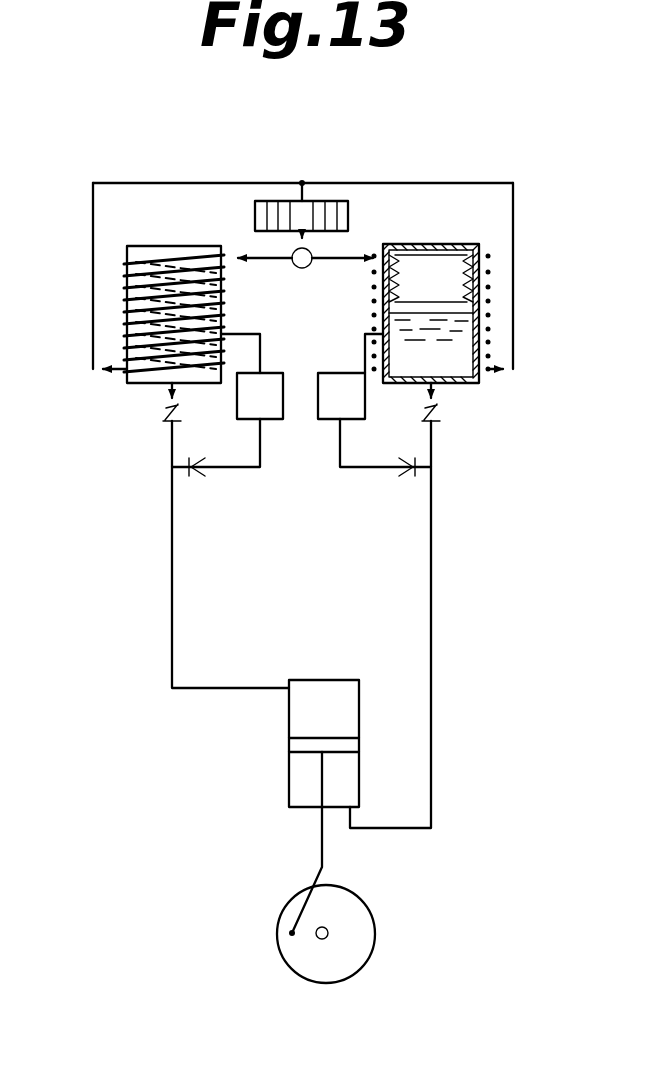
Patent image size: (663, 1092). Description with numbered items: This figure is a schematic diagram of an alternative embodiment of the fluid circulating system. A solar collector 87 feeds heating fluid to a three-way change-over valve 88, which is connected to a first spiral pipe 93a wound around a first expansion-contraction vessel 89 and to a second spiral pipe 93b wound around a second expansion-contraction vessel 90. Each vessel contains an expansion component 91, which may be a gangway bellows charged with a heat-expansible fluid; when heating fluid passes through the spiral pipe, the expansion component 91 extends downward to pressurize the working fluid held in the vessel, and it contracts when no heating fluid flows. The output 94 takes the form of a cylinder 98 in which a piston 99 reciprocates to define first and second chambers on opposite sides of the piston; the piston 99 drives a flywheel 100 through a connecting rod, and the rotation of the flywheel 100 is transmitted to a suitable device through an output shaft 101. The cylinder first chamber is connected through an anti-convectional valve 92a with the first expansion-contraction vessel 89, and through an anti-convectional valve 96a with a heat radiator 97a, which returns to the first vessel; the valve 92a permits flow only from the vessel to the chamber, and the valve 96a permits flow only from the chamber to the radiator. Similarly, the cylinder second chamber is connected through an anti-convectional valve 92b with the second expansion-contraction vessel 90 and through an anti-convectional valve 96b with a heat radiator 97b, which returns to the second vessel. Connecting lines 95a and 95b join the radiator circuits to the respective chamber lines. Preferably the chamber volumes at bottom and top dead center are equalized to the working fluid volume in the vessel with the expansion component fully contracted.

The solar collector 87 is at (274, 206).
The three-way change-over valve 88 is at (302, 268).
The first expansion-contraction vessel 89 is at (184, 235).
The second expansion-contraction vessel 90 is at (441, 249).
The expansion component 91 is at (428, 302).
The anti-convectional valve 92a is at (167, 410).
The anti-convectional valve 92b is at (440, 410).
The first spiral pipe 93a is at (127, 290).
The second spiral pipe 93b is at (489, 305).
The output 94 is at (318, 743).
The pipe 95a is at (246, 470).
The pipe 95b is at (364, 470).
The anti-convectional valve 96a is at (199, 478).
The anti-convectional valve 96b is at (406, 482).
The heat radiator 97a is at (271, 373).
The heat radiator 97b is at (318, 408).
The cylinder 98 is at (360, 752).
The piston 99 is at (318, 738).
The flywheel 100 is at (346, 890).
The output shaft 101 is at (321, 940).